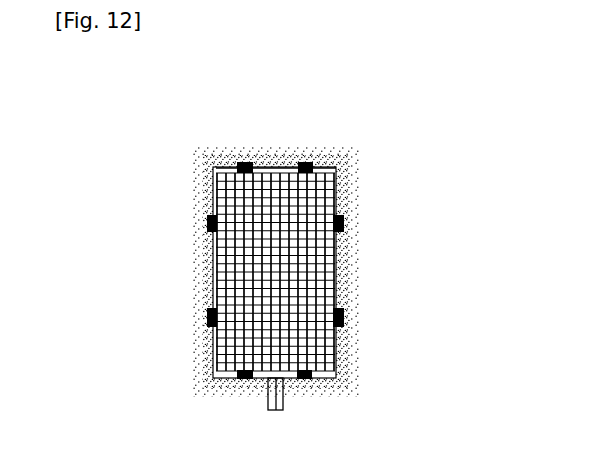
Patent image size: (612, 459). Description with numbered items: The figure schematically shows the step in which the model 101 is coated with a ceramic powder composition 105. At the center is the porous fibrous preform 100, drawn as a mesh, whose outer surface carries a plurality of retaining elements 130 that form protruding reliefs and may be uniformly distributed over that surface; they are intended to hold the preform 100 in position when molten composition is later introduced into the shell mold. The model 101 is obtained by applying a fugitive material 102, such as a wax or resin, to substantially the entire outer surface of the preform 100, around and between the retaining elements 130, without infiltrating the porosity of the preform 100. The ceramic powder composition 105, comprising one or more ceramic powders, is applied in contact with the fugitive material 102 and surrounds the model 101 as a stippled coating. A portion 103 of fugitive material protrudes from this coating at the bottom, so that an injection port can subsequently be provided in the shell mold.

The porous fibrous preform 100 is at (315, 212).
The model 101 is at (345, 156).
The fugitive material 102 is at (350, 268).
The portion of fugitive material 103 is at (283, 406).
The ceramic powder composition 105 is at (280, 160).
The retaining elements 130 is at (206, 223).